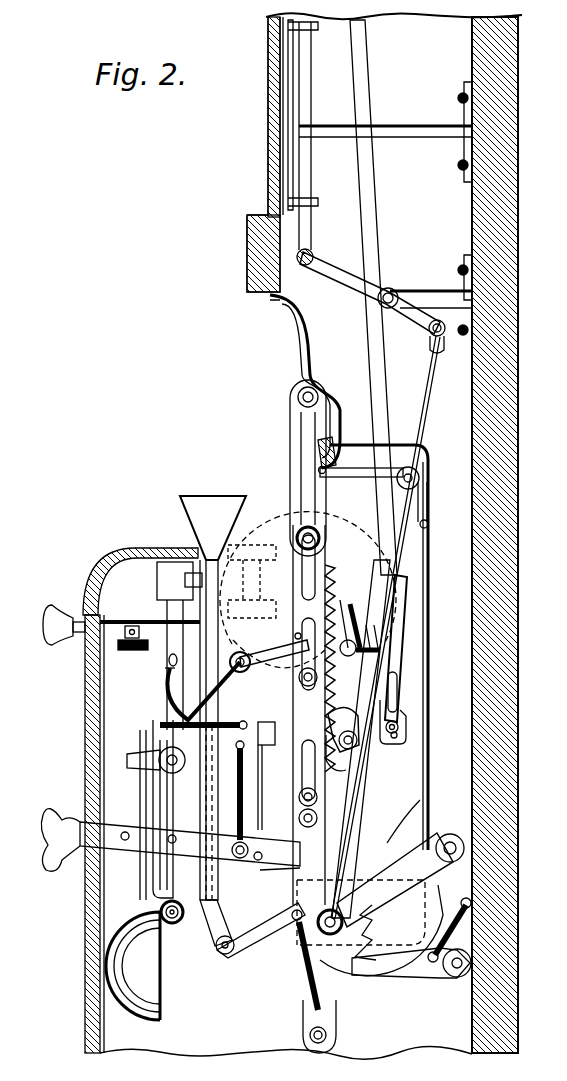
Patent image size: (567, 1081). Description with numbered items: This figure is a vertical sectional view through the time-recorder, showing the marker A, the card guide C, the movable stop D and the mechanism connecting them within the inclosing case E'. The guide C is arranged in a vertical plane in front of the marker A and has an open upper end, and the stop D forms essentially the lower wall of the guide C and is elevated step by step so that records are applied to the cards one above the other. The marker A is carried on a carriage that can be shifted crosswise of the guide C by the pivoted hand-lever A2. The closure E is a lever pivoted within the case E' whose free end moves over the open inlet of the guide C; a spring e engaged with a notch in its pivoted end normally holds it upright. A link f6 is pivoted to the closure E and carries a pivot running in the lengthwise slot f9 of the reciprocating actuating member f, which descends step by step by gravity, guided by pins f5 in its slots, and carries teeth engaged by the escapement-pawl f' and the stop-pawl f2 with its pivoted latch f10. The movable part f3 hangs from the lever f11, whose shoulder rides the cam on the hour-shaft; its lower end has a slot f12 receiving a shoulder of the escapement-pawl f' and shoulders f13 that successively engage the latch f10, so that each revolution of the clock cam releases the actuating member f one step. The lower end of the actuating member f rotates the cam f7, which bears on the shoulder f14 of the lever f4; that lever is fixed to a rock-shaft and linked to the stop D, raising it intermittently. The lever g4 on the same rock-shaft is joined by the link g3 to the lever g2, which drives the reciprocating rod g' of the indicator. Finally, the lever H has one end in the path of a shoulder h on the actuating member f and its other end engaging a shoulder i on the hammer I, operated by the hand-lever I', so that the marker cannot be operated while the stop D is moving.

The inclosing case E' is at (270, 116).
The reciprocating rod g' is at (319, 143).
The lever g2 is at (337, 275).
The link g3 is at (428, 415).
The closure E is at (305, 381).
The link f6 is at (300, 428).
The lengthwise slot f9 is at (320, 545).
The marker A is at (326, 528).
The spring e is at (340, 471).
The movable part f3 is at (383, 520).
The guide C is at (210, 512).
The hammer I is at (122, 632).
The hand-lever A2 is at (118, 622).
The shoulder i is at (168, 660).
The lever H is at (180, 703).
The shoulder h is at (296, 636).
The actuating member f is at (305, 715).
The pins f5 is at (300, 679).
The stop-pawl f2 is at (342, 606).
The pivoted latch f10 is at (373, 624).
The shoulders f13 is at (388, 616).
The slot f12 is at (396, 712).
The escapement-pawl f' is at (344, 731).
The stop D is at (206, 820).
The hand-lever I' is at (152, 840).
The lever f11 is at (300, 868).
The lever f4 is at (262, 920).
The cam f7 is at (405, 835).
The shoulder f14 is at (385, 822).
The lever g4 is at (432, 872).